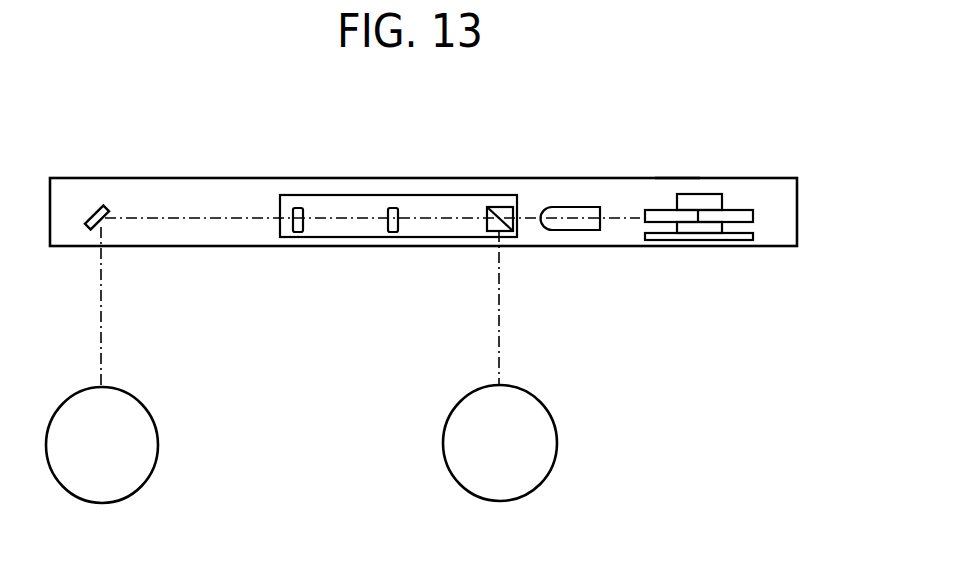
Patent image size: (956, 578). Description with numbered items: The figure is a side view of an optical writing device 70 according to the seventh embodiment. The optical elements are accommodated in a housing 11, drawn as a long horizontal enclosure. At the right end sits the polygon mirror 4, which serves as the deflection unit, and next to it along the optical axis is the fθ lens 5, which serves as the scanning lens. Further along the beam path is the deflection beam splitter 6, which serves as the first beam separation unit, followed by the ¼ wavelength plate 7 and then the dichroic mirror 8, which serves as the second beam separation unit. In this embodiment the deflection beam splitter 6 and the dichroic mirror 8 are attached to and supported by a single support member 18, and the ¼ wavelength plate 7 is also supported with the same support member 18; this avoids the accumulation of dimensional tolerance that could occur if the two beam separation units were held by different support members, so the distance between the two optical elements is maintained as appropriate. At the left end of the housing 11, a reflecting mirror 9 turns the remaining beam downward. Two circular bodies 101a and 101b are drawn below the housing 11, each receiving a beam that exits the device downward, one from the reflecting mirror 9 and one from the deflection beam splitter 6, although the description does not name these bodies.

The optical writing device 70 is at (196, 132).
The reflecting mirror 9 is at (95, 205).
The dichroic mirror 8 is at (297, 207).
The ¼ wavelength plate 7 is at (393, 207).
The deflection beam splitter 6 is at (506, 206).
The fθ lens 5 is at (578, 207).
The housing 11 is at (677, 178).
The polygon mirror 4 is at (750, 210).
The support member 18 is at (350, 237).
The photosensitive drum 101a is at (158, 441).
The photosensitive drum 101b is at (557, 448).